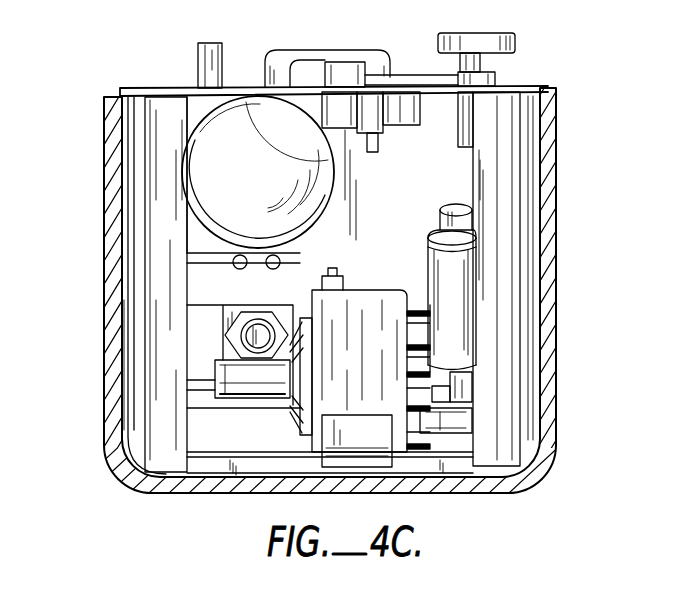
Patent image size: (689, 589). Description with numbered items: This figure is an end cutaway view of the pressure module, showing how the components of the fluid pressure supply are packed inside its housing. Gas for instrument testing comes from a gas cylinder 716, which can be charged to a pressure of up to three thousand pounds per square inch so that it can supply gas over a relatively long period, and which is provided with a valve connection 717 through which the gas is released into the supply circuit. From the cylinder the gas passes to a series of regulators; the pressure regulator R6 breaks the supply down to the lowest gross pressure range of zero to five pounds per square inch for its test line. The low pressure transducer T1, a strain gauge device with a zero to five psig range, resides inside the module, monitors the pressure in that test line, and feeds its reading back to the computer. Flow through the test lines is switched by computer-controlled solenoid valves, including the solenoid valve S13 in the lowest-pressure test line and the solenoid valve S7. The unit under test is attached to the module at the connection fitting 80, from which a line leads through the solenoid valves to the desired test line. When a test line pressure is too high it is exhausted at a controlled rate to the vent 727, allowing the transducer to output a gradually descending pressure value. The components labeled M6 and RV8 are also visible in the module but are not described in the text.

The connection fitting 80 is at (203, 43).
The vent 727 is at (417, 75).
The valve connection 717 is at (498, 35).
The gas cylinder 716 is at (223, 162).
The motor M6 is at (333, 267).
The low pressure transducer T1 is at (456, 276).
The relief valve RV8 is at (235, 337).
The solenoid valve S13 is at (440, 368).
The pressure regulator R6 is at (228, 381).
The solenoid valve S7 is at (452, 417).